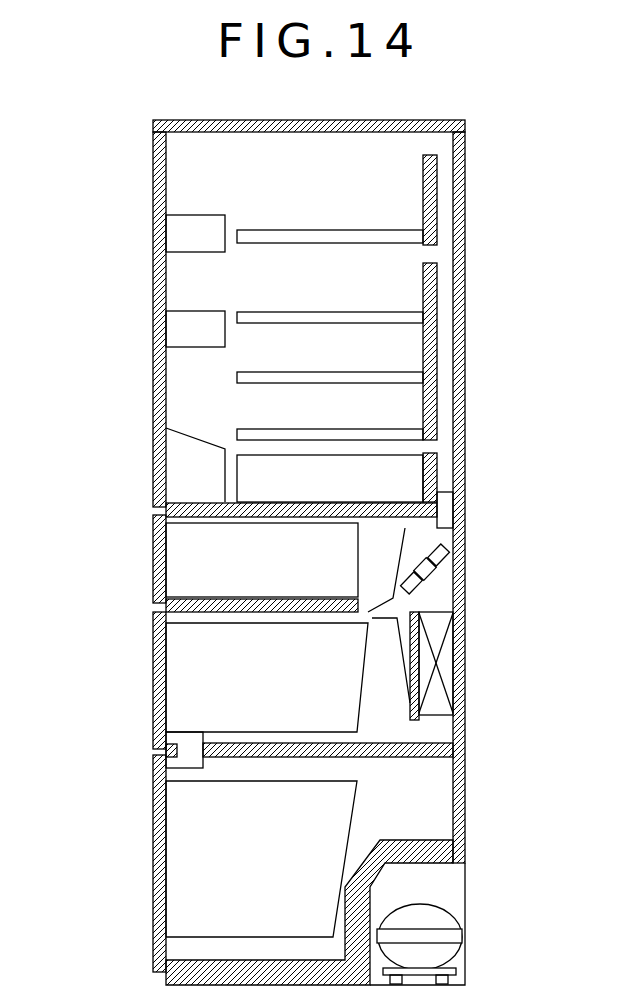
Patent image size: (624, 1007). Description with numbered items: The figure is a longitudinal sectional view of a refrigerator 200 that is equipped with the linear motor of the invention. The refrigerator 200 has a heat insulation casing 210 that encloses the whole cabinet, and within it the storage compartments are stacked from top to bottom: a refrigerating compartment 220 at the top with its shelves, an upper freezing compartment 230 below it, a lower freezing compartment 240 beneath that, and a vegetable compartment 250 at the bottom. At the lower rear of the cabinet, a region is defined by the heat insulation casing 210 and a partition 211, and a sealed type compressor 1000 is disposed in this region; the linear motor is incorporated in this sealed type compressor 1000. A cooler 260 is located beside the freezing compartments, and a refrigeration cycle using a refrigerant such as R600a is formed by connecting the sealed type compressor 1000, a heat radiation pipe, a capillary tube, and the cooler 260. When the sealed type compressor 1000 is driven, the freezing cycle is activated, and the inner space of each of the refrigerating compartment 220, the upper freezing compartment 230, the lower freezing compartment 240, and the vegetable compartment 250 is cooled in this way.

The refrigerator 200 is at (557, 985).
The heat insulation casing 210 is at (465, 207).
The partition 211 is at (472, 943).
The refrigerating compartment 220 is at (213, 393).
The upper freezing compartment 230 is at (218, 568).
The lower freezing compartment 240 is at (218, 688).
The vegetable compartment 250 is at (218, 850).
The cooler 260 is at (437, 628).
The sealed type compressor 1000 is at (417, 913).